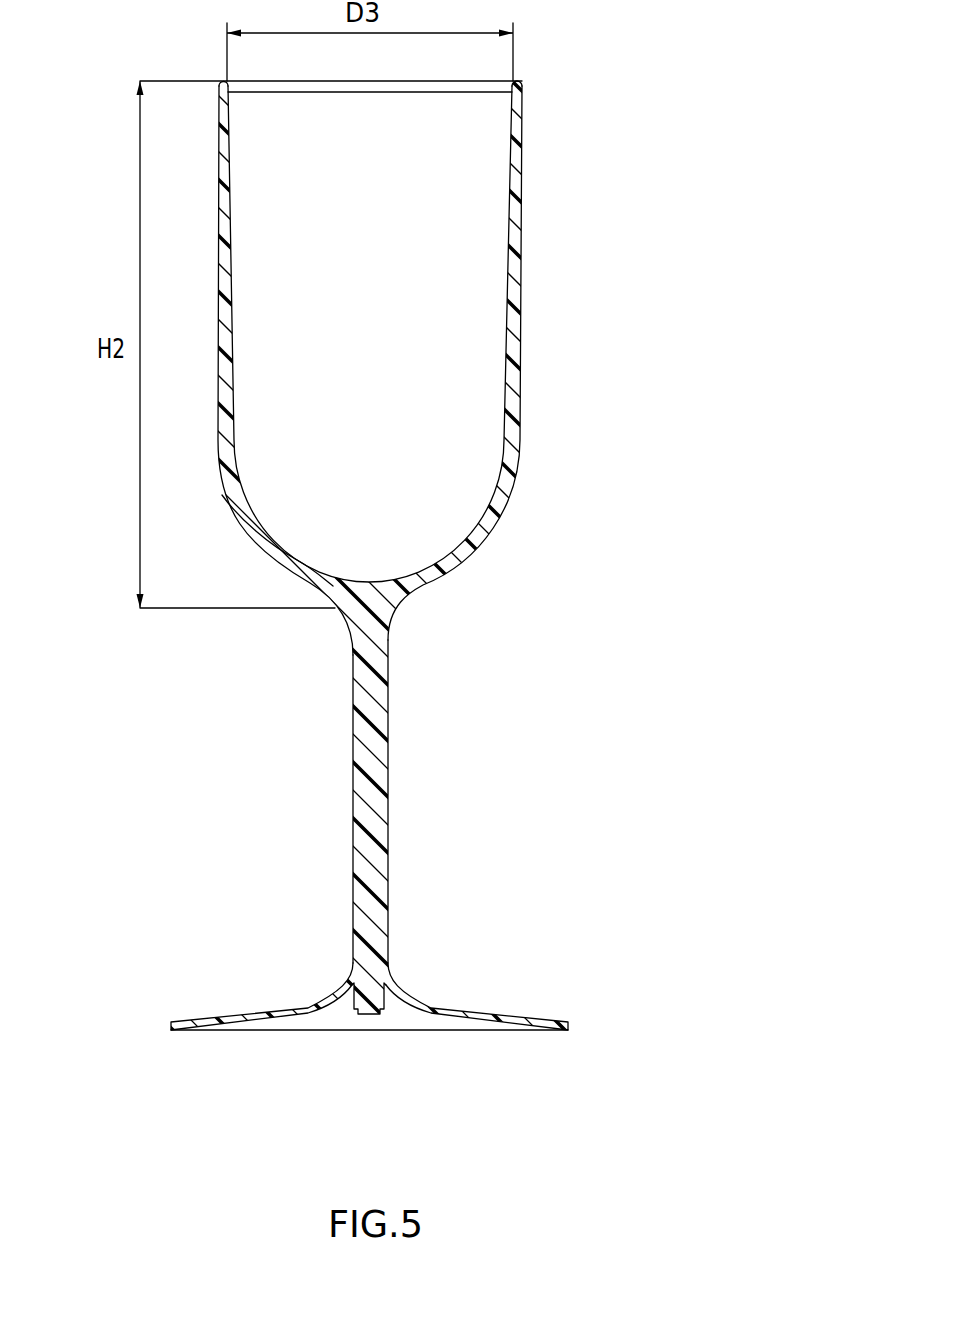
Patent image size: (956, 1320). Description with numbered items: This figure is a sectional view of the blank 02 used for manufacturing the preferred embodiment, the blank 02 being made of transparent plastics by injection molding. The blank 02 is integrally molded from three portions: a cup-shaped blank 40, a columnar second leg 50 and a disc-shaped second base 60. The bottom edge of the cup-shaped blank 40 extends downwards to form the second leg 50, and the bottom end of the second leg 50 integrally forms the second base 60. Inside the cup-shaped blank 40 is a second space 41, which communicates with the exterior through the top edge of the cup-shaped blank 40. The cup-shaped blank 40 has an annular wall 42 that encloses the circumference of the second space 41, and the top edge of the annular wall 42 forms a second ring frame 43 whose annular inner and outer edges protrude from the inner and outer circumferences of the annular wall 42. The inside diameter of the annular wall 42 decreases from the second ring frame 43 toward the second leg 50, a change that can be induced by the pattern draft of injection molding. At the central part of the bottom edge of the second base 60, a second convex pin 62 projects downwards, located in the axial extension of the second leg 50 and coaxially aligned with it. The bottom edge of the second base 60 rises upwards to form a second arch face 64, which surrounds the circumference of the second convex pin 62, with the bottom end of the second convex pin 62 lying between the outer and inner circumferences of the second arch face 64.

The blank 02 is at (478, 558).
The cup-shaped blank 40 is at (420, 327).
The second space 41 is at (481, 437).
The annular wall 42 is at (523, 297).
The second ring frame 43 is at (521, 82).
The second leg 50 is at (388, 709).
The second base 60 is at (369, 1013).
The second convex pin 62 is at (388, 1003).
The second arch face 64 is at (287, 1015).